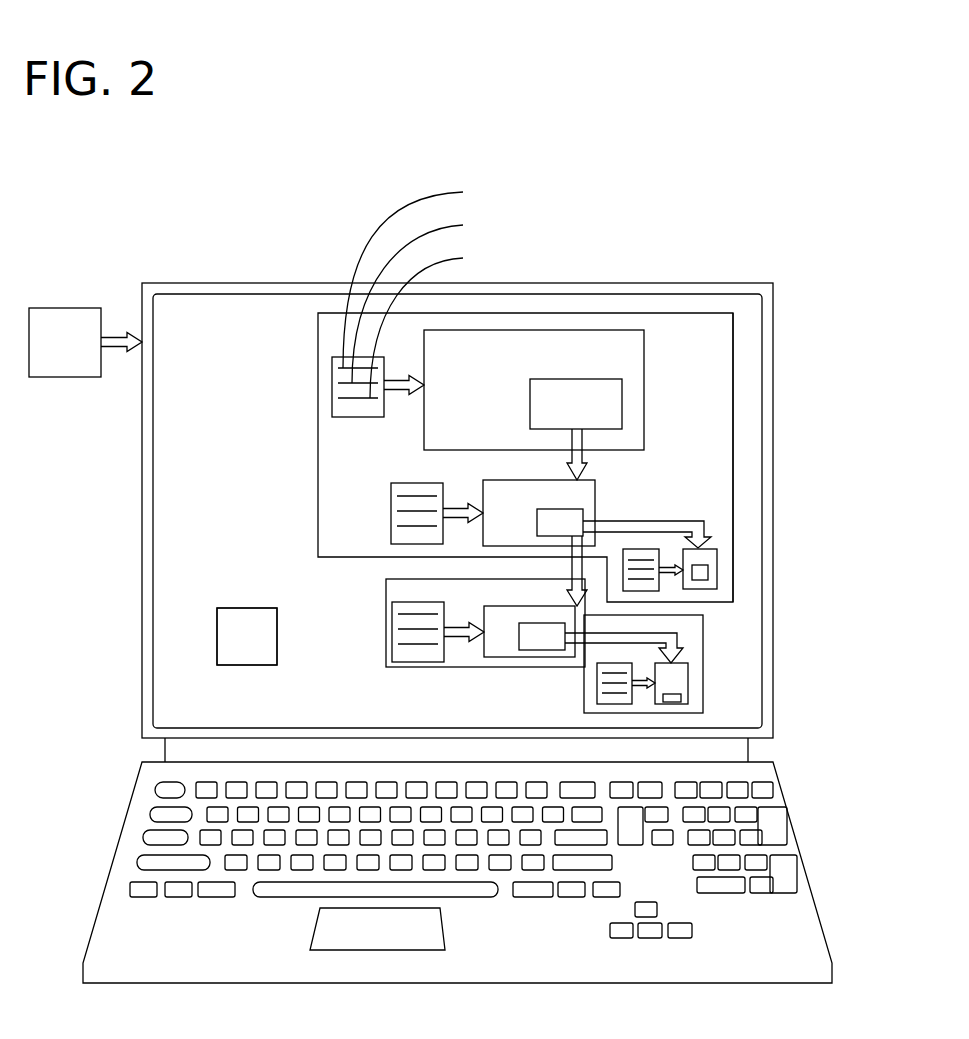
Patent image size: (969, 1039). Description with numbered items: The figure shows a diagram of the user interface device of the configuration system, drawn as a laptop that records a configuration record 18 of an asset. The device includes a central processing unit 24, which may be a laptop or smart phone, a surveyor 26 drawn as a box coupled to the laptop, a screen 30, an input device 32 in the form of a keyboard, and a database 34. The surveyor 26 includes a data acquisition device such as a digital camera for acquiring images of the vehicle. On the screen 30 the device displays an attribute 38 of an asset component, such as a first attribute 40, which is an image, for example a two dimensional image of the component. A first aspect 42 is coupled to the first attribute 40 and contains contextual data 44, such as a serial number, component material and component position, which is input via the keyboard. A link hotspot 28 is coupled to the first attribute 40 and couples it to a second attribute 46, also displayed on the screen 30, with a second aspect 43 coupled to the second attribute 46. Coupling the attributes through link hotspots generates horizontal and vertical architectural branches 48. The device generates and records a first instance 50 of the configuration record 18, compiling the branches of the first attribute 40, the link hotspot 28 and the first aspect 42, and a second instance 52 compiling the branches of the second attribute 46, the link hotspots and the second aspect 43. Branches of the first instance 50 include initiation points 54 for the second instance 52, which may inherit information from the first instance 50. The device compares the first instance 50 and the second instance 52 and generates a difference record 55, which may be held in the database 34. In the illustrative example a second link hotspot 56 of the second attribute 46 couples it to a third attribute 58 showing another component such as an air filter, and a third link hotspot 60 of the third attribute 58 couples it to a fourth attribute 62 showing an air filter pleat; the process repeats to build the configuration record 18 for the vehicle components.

The configuration record 18 is at (735, 315).
The central processing unit 24 is at (180, 777).
The surveyor 26 is at (86, 309).
The link hotspot 28 is at (607, 397).
The screen 30 is at (243, 340).
The input device 32 is at (213, 835).
The database 34 is at (217, 647).
The attribute 38 is at (622, 330).
The first attribute 40 is at (602, 352).
The first aspect 42 is at (332, 407).
The second aspect 43 is at (391, 487).
The contextual data 44 is at (653, 167).
The second attribute 46 is at (590, 485).
The architectural branches 48 is at (655, 518).
The first instance 50 is at (732, 350).
The second instance 52 is at (705, 627).
The initiation points 54 is at (557, 605).
The difference record 55 is at (233, 626).
The processed data 56 is at (567, 531).
The third attribute 58 is at (497, 651).
The third link hotspot 60 is at (555, 631).
The fourth attribute 62 is at (683, 675).